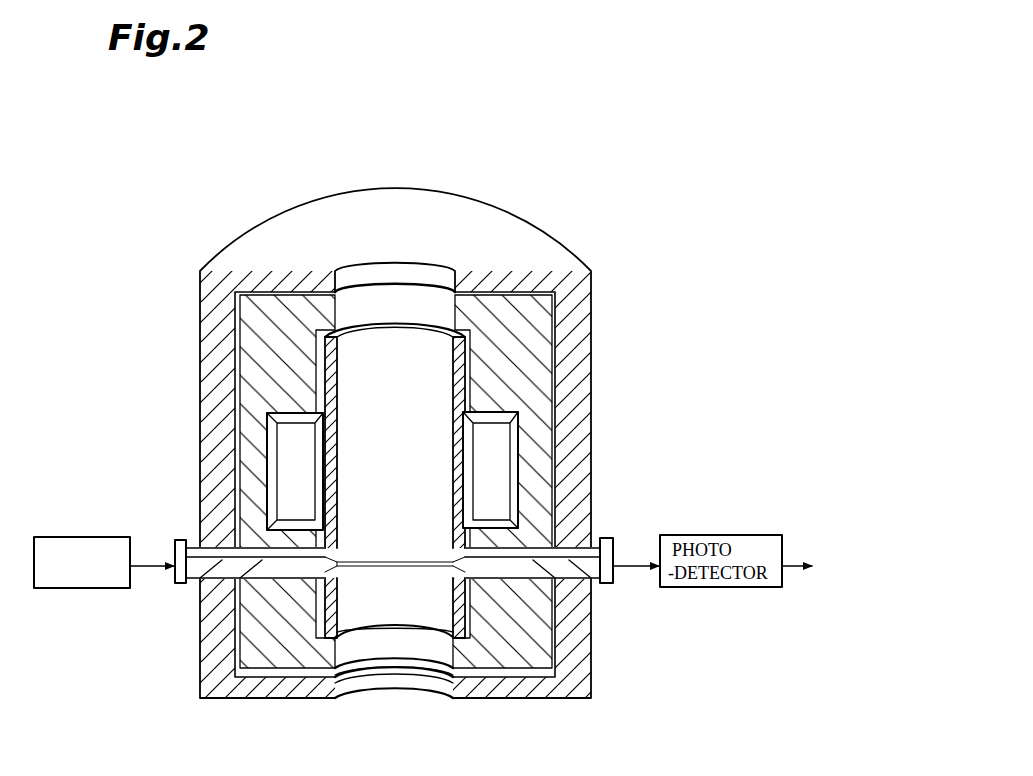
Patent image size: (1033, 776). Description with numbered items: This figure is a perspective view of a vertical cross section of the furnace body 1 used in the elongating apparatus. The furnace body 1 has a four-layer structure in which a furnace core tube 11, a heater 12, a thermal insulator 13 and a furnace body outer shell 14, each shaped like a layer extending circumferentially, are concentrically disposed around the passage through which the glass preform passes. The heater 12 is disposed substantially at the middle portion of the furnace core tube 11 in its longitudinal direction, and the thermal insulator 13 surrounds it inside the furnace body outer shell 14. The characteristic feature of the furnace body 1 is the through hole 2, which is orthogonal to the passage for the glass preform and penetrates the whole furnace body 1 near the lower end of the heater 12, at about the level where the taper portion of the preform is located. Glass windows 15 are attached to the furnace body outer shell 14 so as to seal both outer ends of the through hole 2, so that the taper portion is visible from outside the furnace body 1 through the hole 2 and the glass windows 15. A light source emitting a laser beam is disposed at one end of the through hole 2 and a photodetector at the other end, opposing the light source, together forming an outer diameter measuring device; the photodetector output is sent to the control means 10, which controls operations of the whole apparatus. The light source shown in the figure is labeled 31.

The furnace body 1 is at (722, 172).
The through hole 2 is at (650, 555).
The control means 10 is at (842, 584).
The furnace core tube 11 is at (467, 362).
The heater 12 is at (498, 462).
The thermal insulator 13 is at (541, 375).
The furnace body outer shell 14 is at (580, 313).
The glass window 15 is at (618, 548).
The light source 31 is at (97, 589).